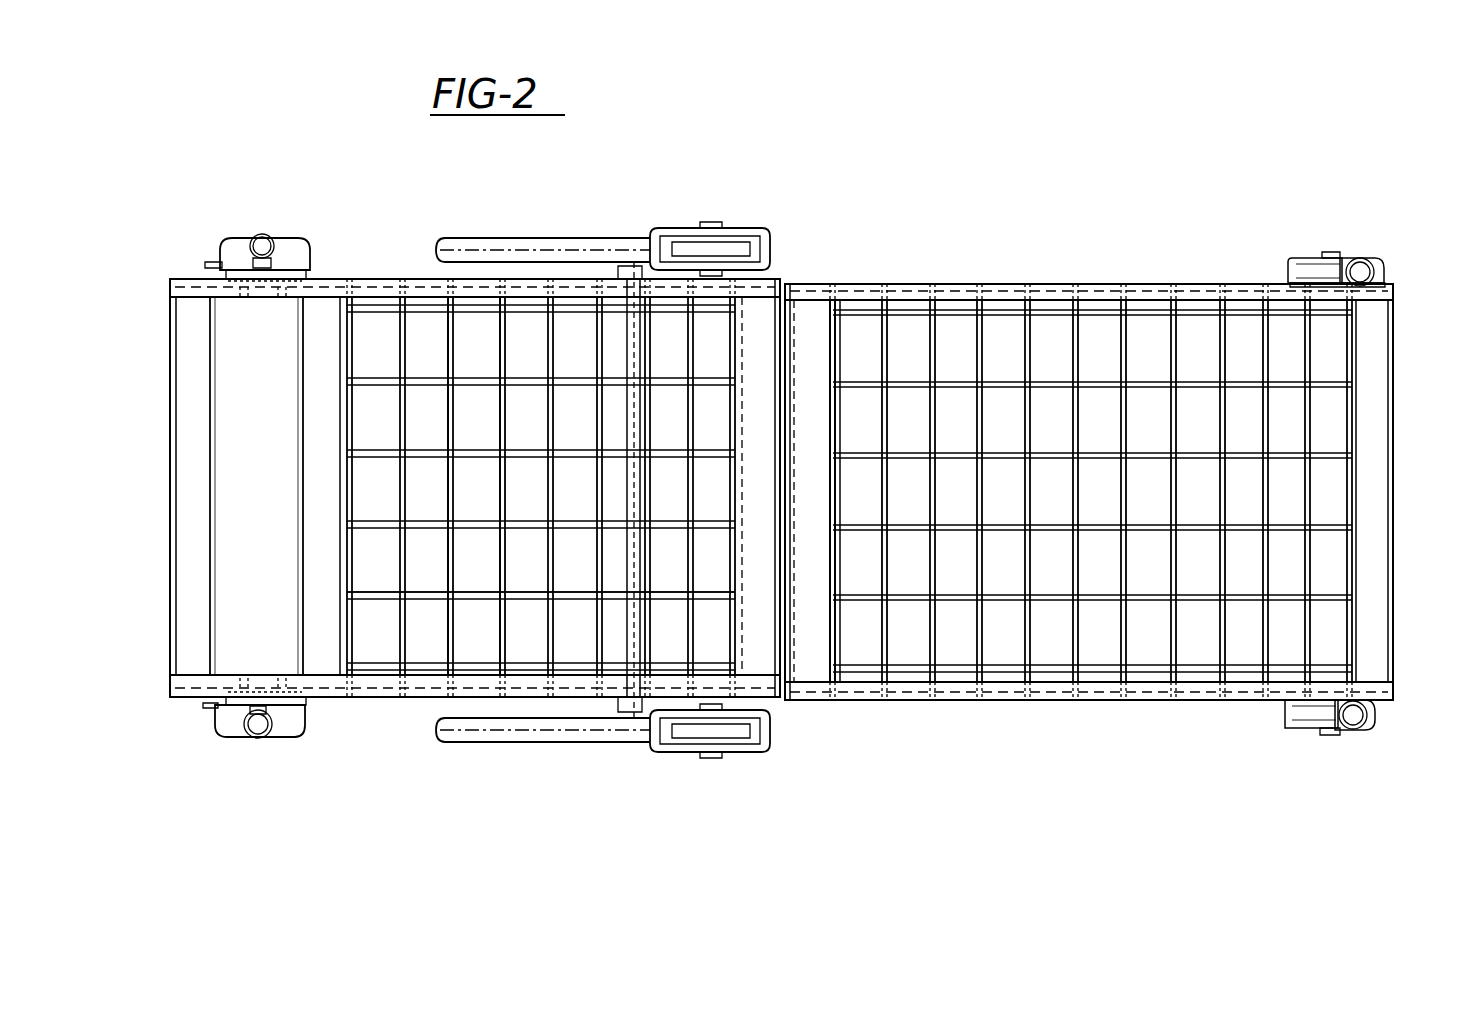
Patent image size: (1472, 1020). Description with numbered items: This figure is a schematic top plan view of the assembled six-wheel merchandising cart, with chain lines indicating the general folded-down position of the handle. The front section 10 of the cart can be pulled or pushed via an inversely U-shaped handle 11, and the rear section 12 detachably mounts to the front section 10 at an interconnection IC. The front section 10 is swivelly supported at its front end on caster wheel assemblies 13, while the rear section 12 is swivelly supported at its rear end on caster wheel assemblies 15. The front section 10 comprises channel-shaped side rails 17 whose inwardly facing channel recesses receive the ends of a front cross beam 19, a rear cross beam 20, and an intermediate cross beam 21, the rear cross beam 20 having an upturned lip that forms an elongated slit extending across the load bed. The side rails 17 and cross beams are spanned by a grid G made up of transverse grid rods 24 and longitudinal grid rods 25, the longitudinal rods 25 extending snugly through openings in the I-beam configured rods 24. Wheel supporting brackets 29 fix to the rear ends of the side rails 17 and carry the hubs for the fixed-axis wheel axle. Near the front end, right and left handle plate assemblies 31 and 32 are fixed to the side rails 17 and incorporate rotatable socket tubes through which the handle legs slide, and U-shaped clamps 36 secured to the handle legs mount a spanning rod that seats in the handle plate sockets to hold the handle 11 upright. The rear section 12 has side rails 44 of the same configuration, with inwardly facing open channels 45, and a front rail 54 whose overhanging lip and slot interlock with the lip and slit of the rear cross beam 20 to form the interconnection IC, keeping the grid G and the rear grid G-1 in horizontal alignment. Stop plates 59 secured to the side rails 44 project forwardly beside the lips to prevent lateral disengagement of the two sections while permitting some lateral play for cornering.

The front section of the cart 10 is at (160, 272).
The inversely U-shaped handle 11 is at (268, 740).
The rear section of the cart 12 is at (996, 280).
The caster wheel assemblies 13 is at (762, 240).
The caster wheel assemblies 15 is at (1326, 254).
The channel-shaped side rails 17 is at (330, 278).
The front cross beam 19 is at (182, 407).
The rear cross beam 20 is at (762, 668).
The intermediate cross beam 21 is at (312, 492).
The transverse grid rods 24 is at (497, 655).
The longitudinal grid rods 25 is at (432, 598).
The wheel supporting brackets 29 is at (778, 282).
The right handle plate assembly 31 is at (196, 710).
The left handle plate assembly 32 is at (318, 242).
The U-shaped clamps 36 is at (648, 228).
The side rails 44 is at (1133, 284).
The inwardly facing open channels 45 is at (1388, 338).
The front rail 54 is at (825, 625).
The stop plates 59 is at (818, 284).
The grid G is at (412, 334).
The grid G-1 is at (1184, 336).
The interconnection IC is at (796, 368).